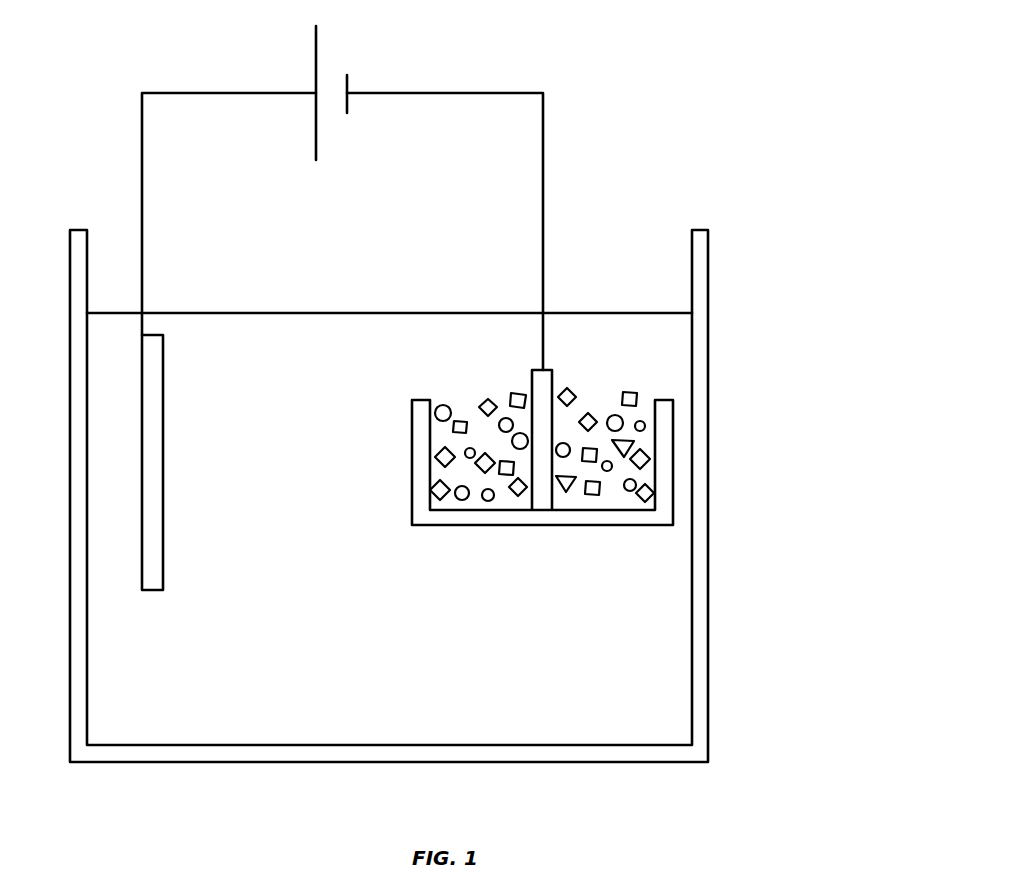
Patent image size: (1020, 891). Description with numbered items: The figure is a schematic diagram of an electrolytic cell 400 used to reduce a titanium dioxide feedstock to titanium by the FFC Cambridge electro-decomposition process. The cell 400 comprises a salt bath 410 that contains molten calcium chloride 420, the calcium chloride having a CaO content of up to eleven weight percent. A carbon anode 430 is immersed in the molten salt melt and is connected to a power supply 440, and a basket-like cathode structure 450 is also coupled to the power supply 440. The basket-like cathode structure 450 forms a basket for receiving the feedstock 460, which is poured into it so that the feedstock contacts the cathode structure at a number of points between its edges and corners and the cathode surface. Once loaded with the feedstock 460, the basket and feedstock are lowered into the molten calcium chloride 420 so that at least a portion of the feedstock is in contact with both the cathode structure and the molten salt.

The cell 400 is at (595, 236).
The salt bath 410 is at (702, 563).
The molten calcium chloride 420 is at (326, 633).
The carbon anode 430 is at (153, 460).
The power supply 440 is at (336, 125).
The basket-like cathode structure 450 is at (543, 526).
The feedstock 460 is at (468, 400).